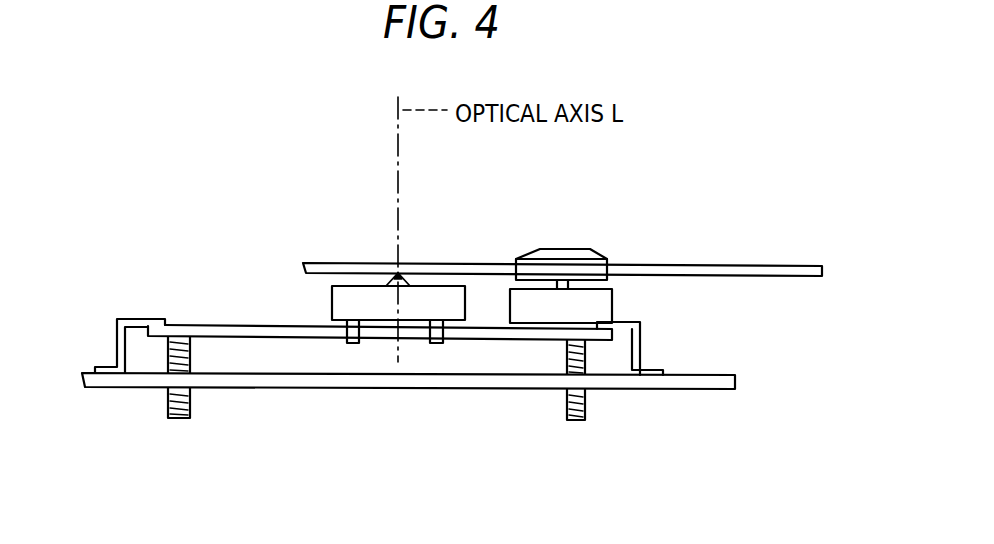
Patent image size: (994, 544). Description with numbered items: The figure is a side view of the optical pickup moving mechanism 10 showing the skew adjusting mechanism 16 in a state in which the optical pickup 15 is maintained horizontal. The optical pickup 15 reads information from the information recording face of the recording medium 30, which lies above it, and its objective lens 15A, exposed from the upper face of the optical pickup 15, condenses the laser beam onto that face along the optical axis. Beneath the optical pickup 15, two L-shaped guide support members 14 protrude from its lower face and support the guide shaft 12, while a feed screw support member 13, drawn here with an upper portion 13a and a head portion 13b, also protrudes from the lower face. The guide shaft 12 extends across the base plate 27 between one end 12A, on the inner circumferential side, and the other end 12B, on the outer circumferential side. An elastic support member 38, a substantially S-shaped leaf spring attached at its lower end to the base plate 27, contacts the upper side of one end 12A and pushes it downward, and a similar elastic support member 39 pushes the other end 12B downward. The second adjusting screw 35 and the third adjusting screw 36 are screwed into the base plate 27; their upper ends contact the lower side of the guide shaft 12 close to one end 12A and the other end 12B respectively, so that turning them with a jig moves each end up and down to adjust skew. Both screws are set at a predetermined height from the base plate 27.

The optical pickup moving mechanism 10 is at (795, 200).
The guide shaft 12 is at (224, 324).
The one end of the guide shaft 12A is at (598, 341).
The other end of the guide shaft 12B is at (173, 325).
The feed screw support member 13 is at (613, 308).
The shaft of adjusting block 13a is at (595, 281).
The head of adjusting block 13b is at (565, 248).
The L-shaped guide support member 14 is at (432, 345).
The optical pickup 15 is at (332, 300).
The objective lens 15A is at (385, 285).
The skew adjusting mechanism 16 is at (128, 418).
The base plate 27 is at (282, 389).
The recording medium 30 is at (458, 262).
The second adjusting screw 35 is at (565, 360).
The third adjusting screw 36 is at (178, 419).
The elastic support member 38 is at (640, 338).
The elastic support member 39 is at (118, 342).